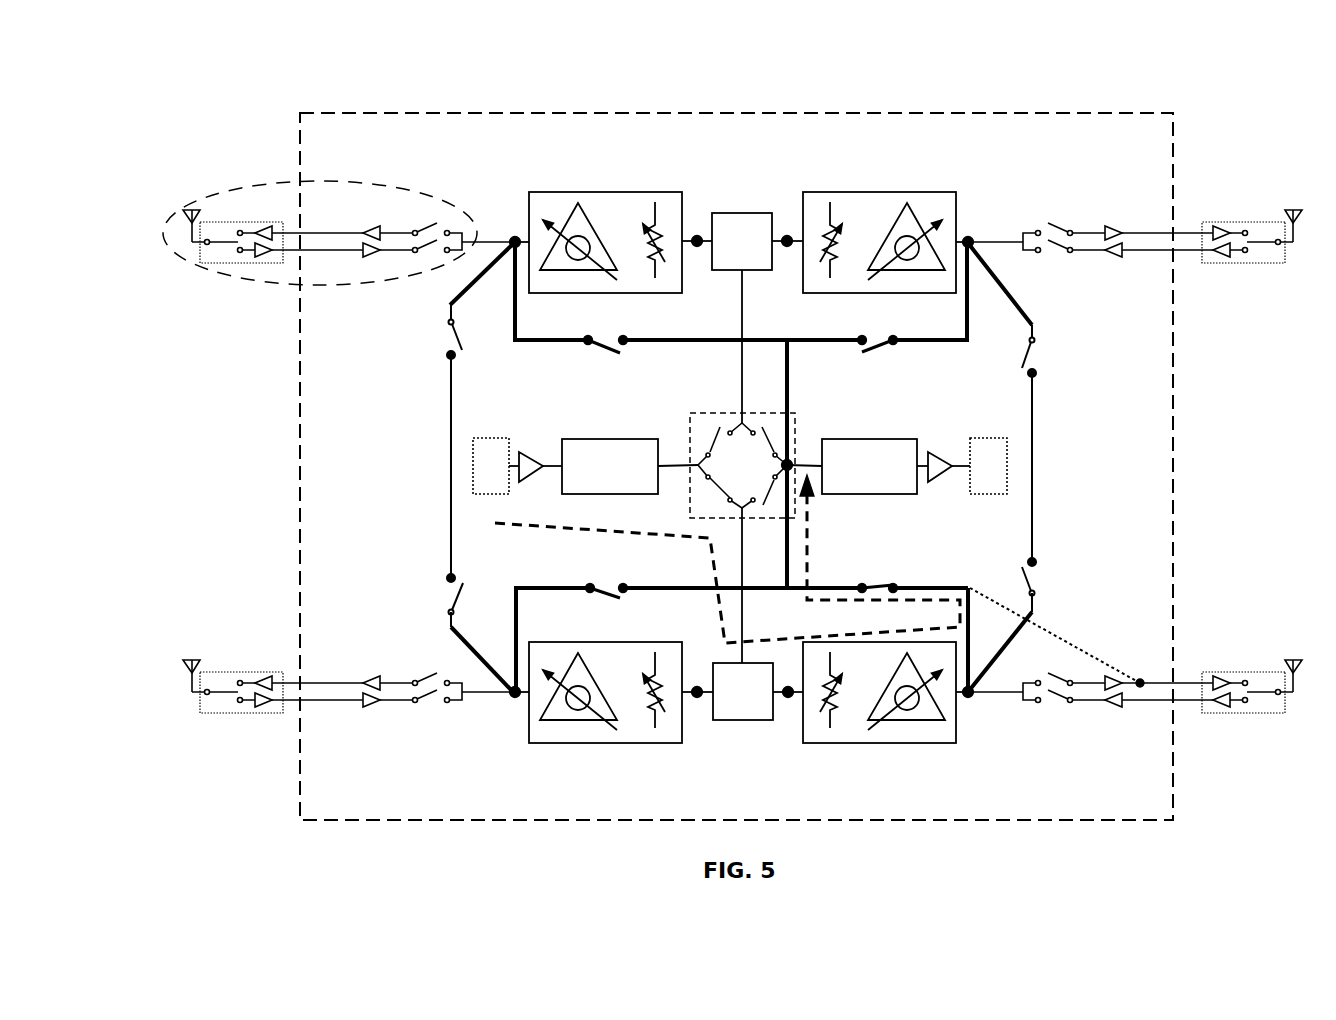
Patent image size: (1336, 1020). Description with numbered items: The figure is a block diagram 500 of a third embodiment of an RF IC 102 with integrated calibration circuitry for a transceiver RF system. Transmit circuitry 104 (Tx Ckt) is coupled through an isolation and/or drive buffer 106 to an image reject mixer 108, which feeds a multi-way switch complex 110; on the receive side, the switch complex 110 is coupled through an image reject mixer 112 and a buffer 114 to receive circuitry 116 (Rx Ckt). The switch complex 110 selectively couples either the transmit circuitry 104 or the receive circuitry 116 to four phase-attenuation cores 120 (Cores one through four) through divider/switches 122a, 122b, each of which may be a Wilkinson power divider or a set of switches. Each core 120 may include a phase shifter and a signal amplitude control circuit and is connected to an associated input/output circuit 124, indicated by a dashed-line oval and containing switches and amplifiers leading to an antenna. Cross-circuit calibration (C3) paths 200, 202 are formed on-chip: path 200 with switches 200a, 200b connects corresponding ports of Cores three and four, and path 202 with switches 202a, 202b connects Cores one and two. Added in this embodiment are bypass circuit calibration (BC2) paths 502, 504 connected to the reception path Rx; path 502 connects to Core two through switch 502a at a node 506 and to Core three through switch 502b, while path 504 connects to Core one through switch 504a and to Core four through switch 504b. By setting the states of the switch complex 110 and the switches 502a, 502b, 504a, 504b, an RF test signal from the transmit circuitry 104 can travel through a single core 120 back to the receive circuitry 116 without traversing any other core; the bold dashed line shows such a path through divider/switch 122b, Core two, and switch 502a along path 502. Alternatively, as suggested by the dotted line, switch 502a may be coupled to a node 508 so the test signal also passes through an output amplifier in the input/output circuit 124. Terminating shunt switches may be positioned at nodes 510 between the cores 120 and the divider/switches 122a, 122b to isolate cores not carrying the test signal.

The block diagram 500 is at (234, 76).
The RF IC 102 is at (1173, 145).
The input/output circuit 124 is at (222, 193).
The phase-attenuation core 120 is at (522, 193).
The node 510 is at (697, 230).
The divider/switch 122a is at (727, 213).
The divider/switch 122b is at (725, 721).
The BC2 path 504 is at (792, 343).
The switch 504a is at (880, 348).
The switch 504b is at (603, 353).
The BC2 path 502 is at (692, 593).
The switch 502a is at (887, 582).
The switch 502b is at (610, 582).
The node 506 is at (968, 695).
The node 508 is at (1138, 680).
The C3 path 200 is at (445, 452).
The switch 200a is at (430, 340).
The switch 200b is at (430, 598).
The C3 path 202 is at (1037, 453).
The switch 202a is at (1038, 362).
The switch 202b is at (1037, 580).
The transmit circuitry 104 is at (480, 435).
The isolation and/or drive buffer 106 is at (537, 450).
The image reject mixer 108 is at (613, 437).
The multi-way switch complex 110 is at (717, 412).
The image reject mixer 112 is at (887, 495).
The isolation and/or drive buffer 114 is at (952, 473).
The receive circuitry 116 is at (988, 495).